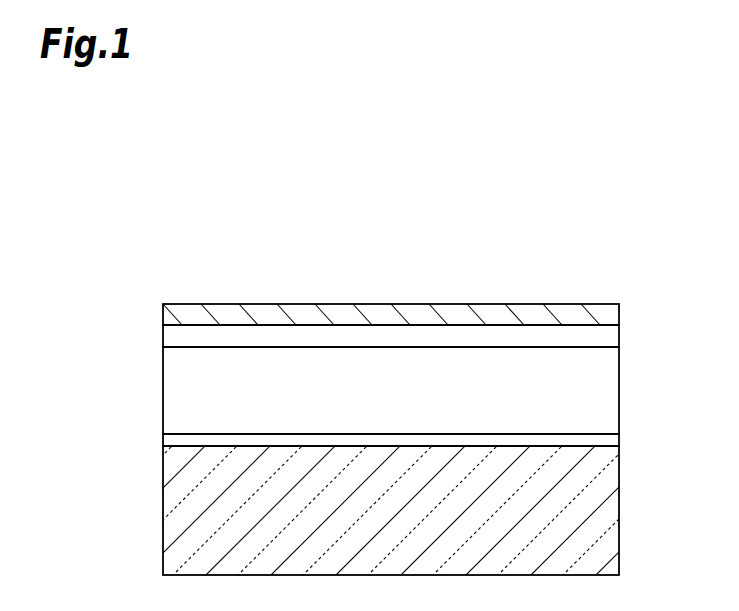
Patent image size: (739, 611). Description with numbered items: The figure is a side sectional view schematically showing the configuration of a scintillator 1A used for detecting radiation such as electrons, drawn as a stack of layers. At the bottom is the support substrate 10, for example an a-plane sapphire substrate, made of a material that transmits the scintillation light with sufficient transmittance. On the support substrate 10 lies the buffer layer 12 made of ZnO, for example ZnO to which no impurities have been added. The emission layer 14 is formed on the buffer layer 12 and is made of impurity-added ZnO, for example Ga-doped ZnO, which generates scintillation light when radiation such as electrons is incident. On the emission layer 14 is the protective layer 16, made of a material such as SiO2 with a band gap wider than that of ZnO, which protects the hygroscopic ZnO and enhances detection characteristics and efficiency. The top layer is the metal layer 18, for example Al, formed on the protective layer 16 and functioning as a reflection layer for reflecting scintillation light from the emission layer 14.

The scintillator 1A is at (527, 260).
The support substrate 10 is at (612, 507).
The buffer layer 12 is at (610, 441).
The emission layer 14 is at (612, 391).
The protective layer 16 is at (610, 340).
The metal layer 18 is at (612, 313).